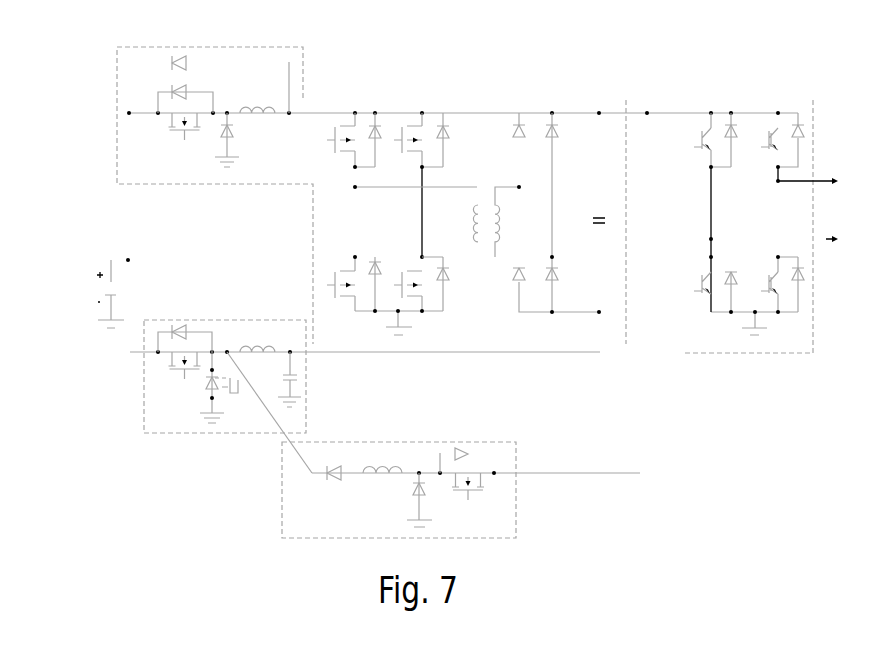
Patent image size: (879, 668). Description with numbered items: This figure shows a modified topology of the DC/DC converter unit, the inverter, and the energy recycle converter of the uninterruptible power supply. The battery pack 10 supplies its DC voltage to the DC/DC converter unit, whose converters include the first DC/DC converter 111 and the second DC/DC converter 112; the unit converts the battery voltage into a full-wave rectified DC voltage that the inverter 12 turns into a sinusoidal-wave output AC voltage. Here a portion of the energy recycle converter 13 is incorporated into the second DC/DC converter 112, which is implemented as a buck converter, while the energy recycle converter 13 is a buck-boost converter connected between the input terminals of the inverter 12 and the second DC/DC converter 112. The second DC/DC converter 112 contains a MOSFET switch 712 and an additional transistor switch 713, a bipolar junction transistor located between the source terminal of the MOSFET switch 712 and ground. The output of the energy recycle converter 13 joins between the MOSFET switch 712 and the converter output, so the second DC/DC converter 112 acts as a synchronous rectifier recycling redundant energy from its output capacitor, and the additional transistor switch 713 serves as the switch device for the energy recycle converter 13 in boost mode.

The battery pack 10 is at (97, 290).
The first DC/DC converter 111 is at (225, 184).
The second DC/DC converter 112 is at (207, 381).
The MOSFET switch 712 is at (167, 372).
The additional transistor switch 713 is at (205, 393).
The inverter 12 is at (762, 353).
The energy recycle converter 13 is at (516, 513).